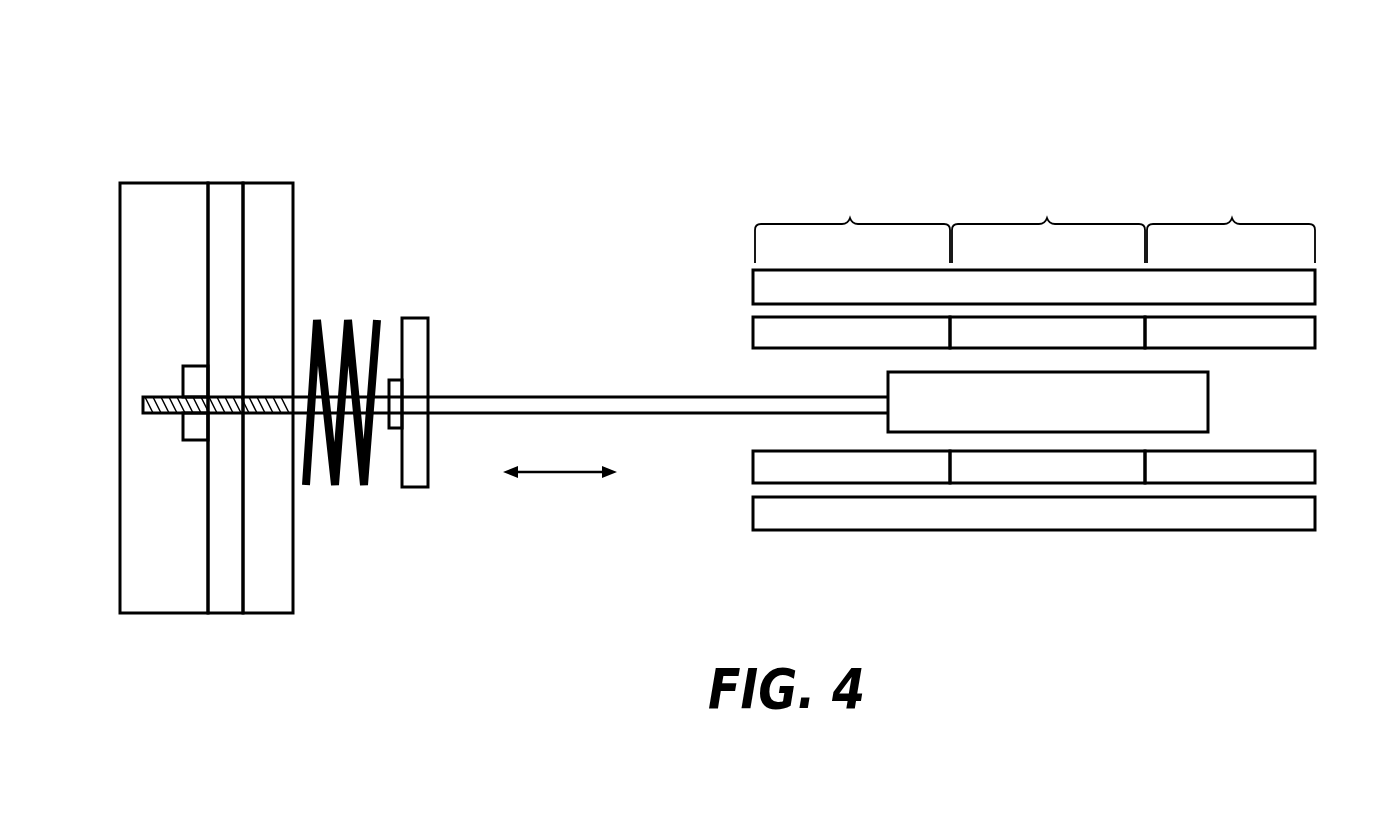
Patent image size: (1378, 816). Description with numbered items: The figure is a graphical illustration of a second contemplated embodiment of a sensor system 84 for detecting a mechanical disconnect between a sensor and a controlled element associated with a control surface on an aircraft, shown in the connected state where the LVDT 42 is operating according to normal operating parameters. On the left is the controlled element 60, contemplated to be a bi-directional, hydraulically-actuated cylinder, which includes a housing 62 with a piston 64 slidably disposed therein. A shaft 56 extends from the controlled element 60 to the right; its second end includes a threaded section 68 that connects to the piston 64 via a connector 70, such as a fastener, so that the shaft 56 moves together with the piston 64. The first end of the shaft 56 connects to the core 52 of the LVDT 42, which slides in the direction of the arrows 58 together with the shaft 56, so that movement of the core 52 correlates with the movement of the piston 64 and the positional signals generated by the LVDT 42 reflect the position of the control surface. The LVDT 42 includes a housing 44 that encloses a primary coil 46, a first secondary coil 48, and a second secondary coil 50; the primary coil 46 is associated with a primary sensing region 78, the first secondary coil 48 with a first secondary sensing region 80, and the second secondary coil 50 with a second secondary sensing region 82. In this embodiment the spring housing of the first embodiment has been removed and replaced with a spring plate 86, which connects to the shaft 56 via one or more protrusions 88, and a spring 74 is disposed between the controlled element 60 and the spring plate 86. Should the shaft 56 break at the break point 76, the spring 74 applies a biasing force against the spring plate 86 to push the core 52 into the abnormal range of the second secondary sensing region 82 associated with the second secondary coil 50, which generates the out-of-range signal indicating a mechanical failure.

The sensor system 84 is at (413, 118).
The controlled element 60 is at (162, 183).
The housing 62 is at (294, 183).
The piston 64 is at (227, 603).
The threaded section 68 is at (152, 397).
The connector 70 is at (188, 430).
The break point 76 is at (294, 414).
The shaft 56 is at (663, 397).
The spring 74 is at (352, 487).
The spring plate 86 is at (415, 318).
The protrusions 88 is at (397, 432).
The arrows 58 is at (557, 474).
The core 52 is at (1182, 402).
The LVDT 42 is at (785, 289).
The first secondary coil 48 is at (780, 331).
The primary coil 46 is at (1003, 335).
The second secondary coil 50 is at (1290, 334).
The housing 44 is at (1056, 516).
The first secondary sensing region 80 is at (852, 225).
The primary sensing region 78 is at (1048, 223).
The second secondary sensing region 82 is at (1231, 225).